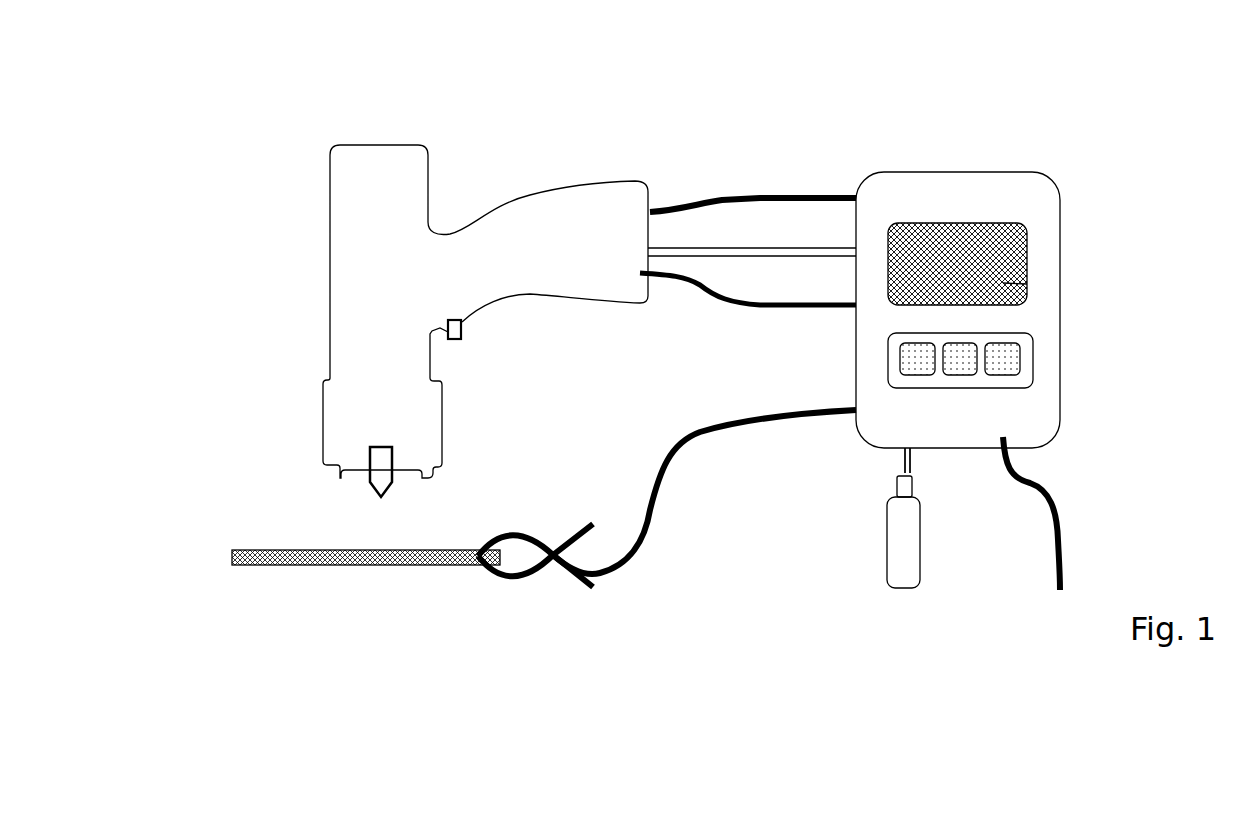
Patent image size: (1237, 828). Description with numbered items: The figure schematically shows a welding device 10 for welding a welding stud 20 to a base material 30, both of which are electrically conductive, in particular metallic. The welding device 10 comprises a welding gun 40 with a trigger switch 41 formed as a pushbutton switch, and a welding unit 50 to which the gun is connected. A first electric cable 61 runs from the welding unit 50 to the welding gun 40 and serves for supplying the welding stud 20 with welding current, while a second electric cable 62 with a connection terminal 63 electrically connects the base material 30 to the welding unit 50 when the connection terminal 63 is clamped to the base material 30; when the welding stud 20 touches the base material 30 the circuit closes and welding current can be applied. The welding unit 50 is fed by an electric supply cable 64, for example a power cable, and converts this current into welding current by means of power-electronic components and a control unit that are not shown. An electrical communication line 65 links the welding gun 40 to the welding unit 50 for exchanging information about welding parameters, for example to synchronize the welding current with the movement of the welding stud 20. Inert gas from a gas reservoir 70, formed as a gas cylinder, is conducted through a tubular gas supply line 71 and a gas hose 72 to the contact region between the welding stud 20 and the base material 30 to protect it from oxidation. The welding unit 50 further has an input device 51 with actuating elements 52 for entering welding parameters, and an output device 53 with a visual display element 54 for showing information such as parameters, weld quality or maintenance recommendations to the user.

The welding device 10 is at (263, 148).
The welding stud 20 is at (370, 480).
The base material 30 is at (365, 564).
The welding gun 40 is at (330, 288).
The trigger switch 41 is at (455, 320).
The welding unit 50 is at (958, 172).
The input device 51 is at (1033, 360).
The actuating elements 52 is at (928, 376).
The output device 53 is at (1027, 262).
The visual display element 54 is at (1027, 284).
The first electric cable 61 is at (726, 197).
The second electric cable 62 is at (682, 445).
The connection terminal 63 is at (519, 580).
The electric supply cable 64 is at (1052, 495).
The electrical communication line 65 is at (765, 300).
The gas reservoir 70 is at (903, 588).
The tubular gas supply line 71 is at (910, 473).
The gas hose 72 is at (833, 245).